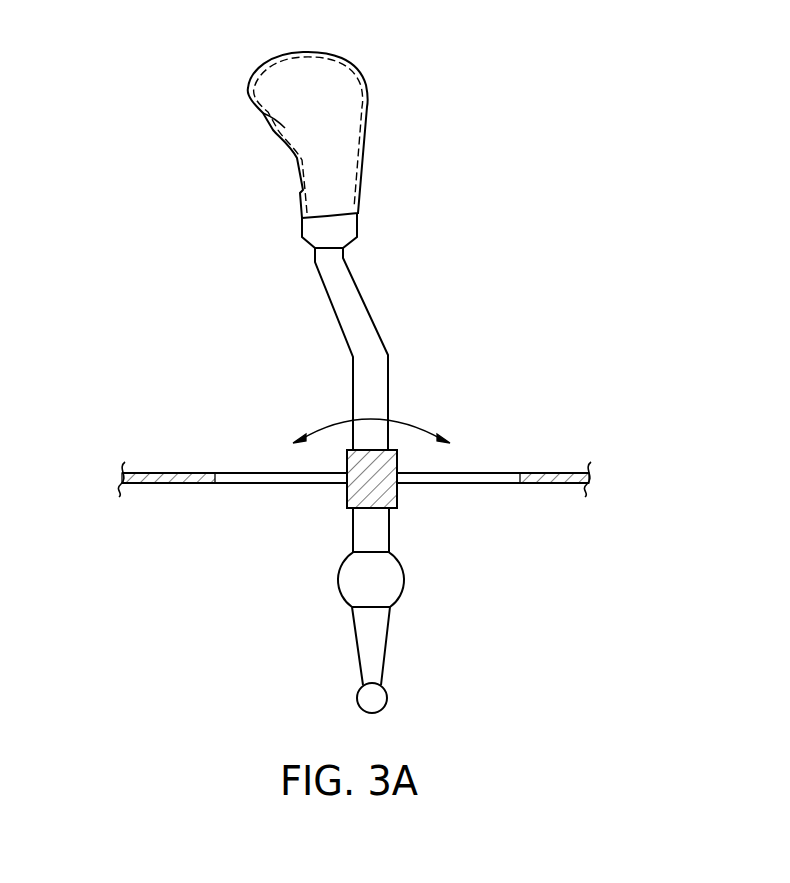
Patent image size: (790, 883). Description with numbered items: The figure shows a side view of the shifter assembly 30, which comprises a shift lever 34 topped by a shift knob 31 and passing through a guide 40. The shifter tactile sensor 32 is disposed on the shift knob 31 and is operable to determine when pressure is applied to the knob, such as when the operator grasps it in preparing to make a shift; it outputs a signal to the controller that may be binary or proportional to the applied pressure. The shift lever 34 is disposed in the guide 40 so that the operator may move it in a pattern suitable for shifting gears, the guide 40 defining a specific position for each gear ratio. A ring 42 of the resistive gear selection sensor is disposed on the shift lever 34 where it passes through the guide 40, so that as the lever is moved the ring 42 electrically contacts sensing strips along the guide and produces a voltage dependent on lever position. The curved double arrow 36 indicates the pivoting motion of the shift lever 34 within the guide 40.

The shifter assembly 30 is at (135, 243).
The shift knob 31 is at (370, 74).
The shifter tactile sensor 32 is at (368, 128).
The shift lever 34 is at (390, 392).
The pivoting direction arrow 36 is at (327, 429).
The guide 40 is at (547, 472).
The ring 42 is at (347, 500).